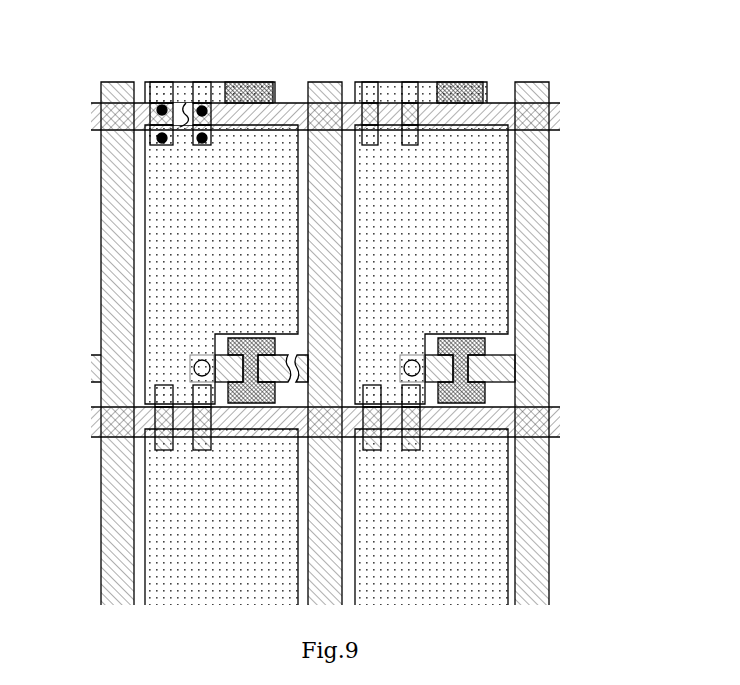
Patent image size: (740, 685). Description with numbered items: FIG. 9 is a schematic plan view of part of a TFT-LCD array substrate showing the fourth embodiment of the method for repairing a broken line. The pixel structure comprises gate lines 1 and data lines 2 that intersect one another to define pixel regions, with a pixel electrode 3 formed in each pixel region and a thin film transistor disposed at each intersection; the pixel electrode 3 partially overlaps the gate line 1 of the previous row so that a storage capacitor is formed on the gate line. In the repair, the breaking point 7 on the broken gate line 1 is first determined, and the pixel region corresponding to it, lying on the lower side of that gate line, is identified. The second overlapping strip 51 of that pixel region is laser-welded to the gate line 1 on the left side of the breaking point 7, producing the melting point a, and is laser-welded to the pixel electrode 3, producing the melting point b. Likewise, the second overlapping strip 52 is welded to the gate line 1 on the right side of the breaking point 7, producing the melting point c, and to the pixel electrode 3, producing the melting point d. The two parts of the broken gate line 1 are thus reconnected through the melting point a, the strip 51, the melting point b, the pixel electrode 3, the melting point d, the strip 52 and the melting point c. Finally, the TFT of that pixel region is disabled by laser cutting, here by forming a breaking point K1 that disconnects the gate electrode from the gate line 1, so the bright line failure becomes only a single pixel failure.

The gate line 1 is at (507, 420).
The data line 2 is at (530, 327).
The pixel electrode 3 is at (275, 220).
The breaking point 7 is at (179, 128).
The second overlapping strip 51 is at (157, 136).
The second overlapping strip 52 is at (210, 120).
The breaking point of the gate electrode K1 is at (297, 357).
The melting point a is at (161, 106).
The melting point b is at (160, 143).
The melting point c is at (204, 107).
The melting point d is at (204, 143).